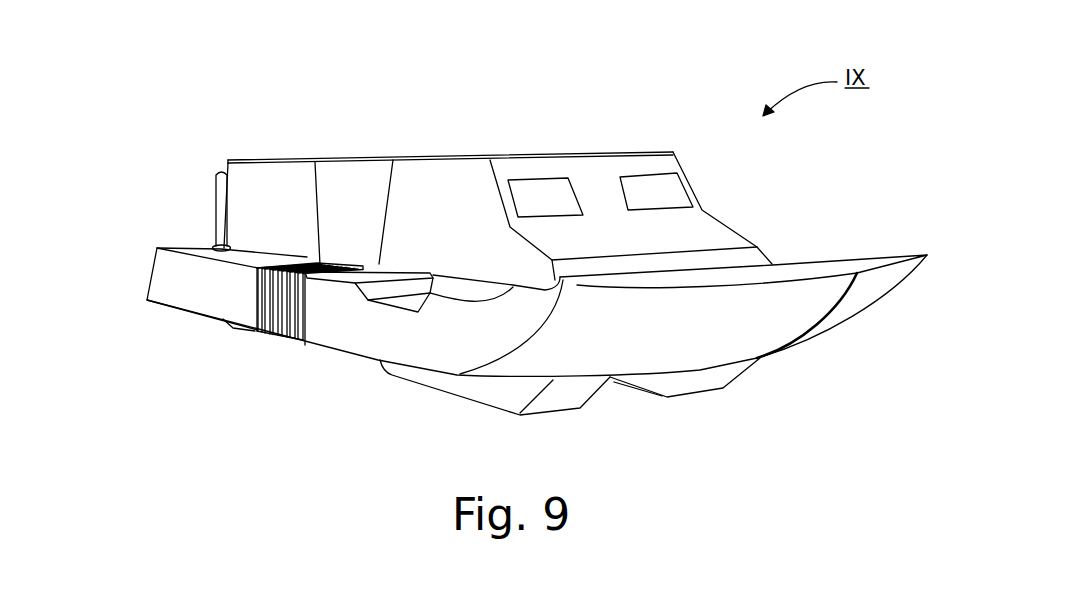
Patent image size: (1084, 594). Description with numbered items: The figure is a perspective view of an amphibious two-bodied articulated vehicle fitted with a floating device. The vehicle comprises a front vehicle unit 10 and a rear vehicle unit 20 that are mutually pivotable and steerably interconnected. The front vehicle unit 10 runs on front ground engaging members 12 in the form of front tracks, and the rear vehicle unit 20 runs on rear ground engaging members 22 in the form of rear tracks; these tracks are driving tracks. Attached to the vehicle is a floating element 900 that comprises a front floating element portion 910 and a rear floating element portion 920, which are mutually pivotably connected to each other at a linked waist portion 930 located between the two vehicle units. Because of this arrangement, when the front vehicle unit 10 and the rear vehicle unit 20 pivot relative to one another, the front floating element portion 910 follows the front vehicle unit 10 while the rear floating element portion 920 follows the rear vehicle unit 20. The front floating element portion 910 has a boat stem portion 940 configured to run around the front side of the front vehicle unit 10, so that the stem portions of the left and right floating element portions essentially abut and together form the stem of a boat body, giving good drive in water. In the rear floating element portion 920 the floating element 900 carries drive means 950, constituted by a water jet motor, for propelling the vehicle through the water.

The front vehicle unit 10 is at (546, 156).
The rear vehicle unit 20 is at (315, 157).
The rear ground engaging members 22 is at (227, 327).
The front ground engaging members 12 is at (497, 400).
The floating element 900 is at (357, 365).
The front floating element portion 910 is at (198, 292).
The rear floating element portion 920 is at (340, 344).
The waist portion 930 is at (270, 328).
The boat stem portion 940 is at (698, 347).
The drive means 950 is at (215, 207).